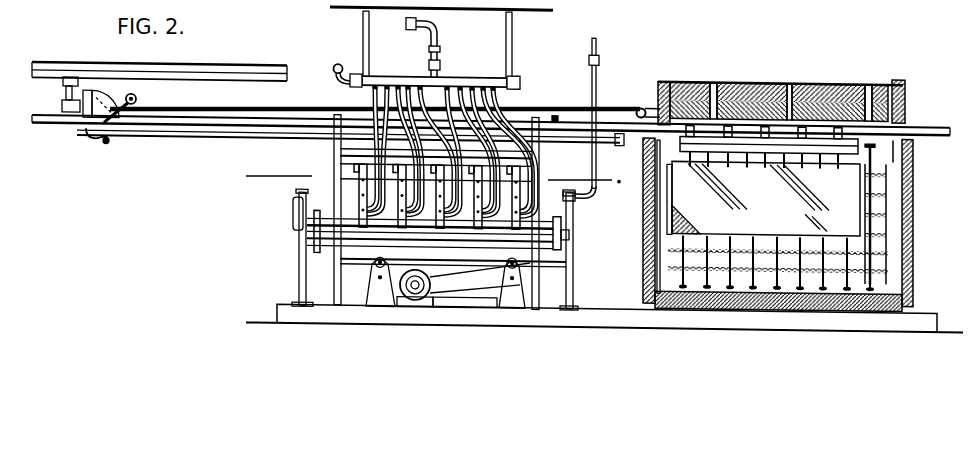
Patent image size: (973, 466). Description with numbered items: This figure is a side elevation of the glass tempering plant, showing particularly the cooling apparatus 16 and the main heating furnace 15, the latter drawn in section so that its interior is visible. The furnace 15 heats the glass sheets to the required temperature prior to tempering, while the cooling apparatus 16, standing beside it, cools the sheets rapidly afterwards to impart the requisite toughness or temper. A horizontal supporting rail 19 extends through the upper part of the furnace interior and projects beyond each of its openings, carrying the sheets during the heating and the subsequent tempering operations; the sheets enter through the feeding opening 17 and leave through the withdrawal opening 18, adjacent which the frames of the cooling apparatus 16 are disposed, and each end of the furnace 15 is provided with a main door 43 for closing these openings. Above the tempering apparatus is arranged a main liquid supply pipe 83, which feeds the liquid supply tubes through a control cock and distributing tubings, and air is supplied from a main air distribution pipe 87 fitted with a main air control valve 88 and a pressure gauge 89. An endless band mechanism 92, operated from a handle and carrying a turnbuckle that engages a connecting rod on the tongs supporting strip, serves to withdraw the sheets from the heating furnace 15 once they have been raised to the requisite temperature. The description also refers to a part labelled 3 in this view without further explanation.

The vacuum pipe 3 is at (424, 187).
The main heating furnace 15 is at (748, 252).
The cooling apparatus 16 is at (317, 224).
The feeding opening 17 is at (896, 192).
The withdrawal opening 18 is at (665, 203).
The horizontal supporting rail 19 is at (292, 114).
The main door 43 is at (646, 249).
The main liquid supply pipe 83 is at (592, 38).
The main air distribution pipe 87 is at (396, 74).
The main air control valve 88 is at (440, 59).
The pressure gauge 89 is at (337, 63).
The endless band mechanism 92 is at (136, 96).